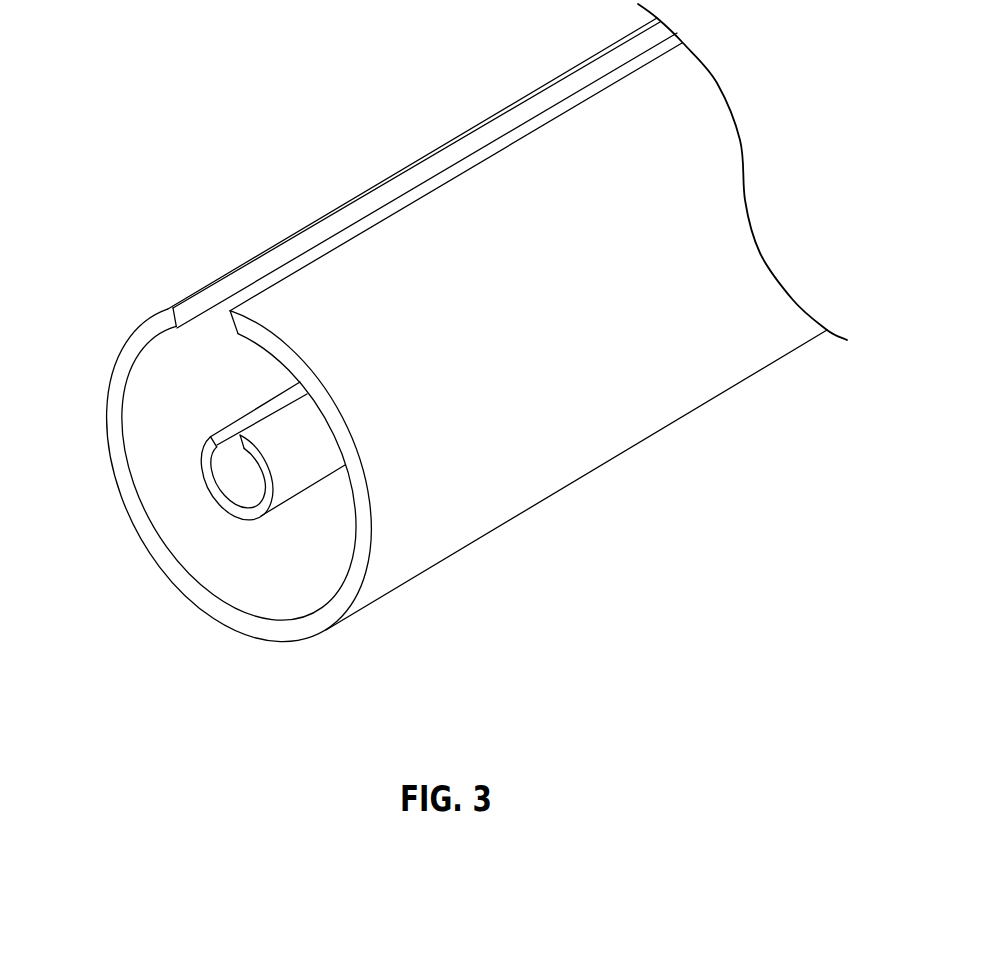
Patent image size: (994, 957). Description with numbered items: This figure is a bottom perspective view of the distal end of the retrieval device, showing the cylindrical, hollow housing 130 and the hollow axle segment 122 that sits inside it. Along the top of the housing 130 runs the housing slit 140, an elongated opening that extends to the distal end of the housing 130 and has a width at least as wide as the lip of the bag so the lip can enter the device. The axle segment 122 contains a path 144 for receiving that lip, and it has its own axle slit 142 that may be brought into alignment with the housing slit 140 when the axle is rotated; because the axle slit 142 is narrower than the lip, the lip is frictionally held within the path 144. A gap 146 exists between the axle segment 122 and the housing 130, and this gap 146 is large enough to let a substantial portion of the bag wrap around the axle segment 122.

The axle segment 122 is at (210, 438).
The housing 130 is at (200, 590).
The housing slit 140 is at (398, 192).
The axle slit 142 is at (162, 475).
The path 144 is at (237, 480).
The gap 146 is at (197, 350).